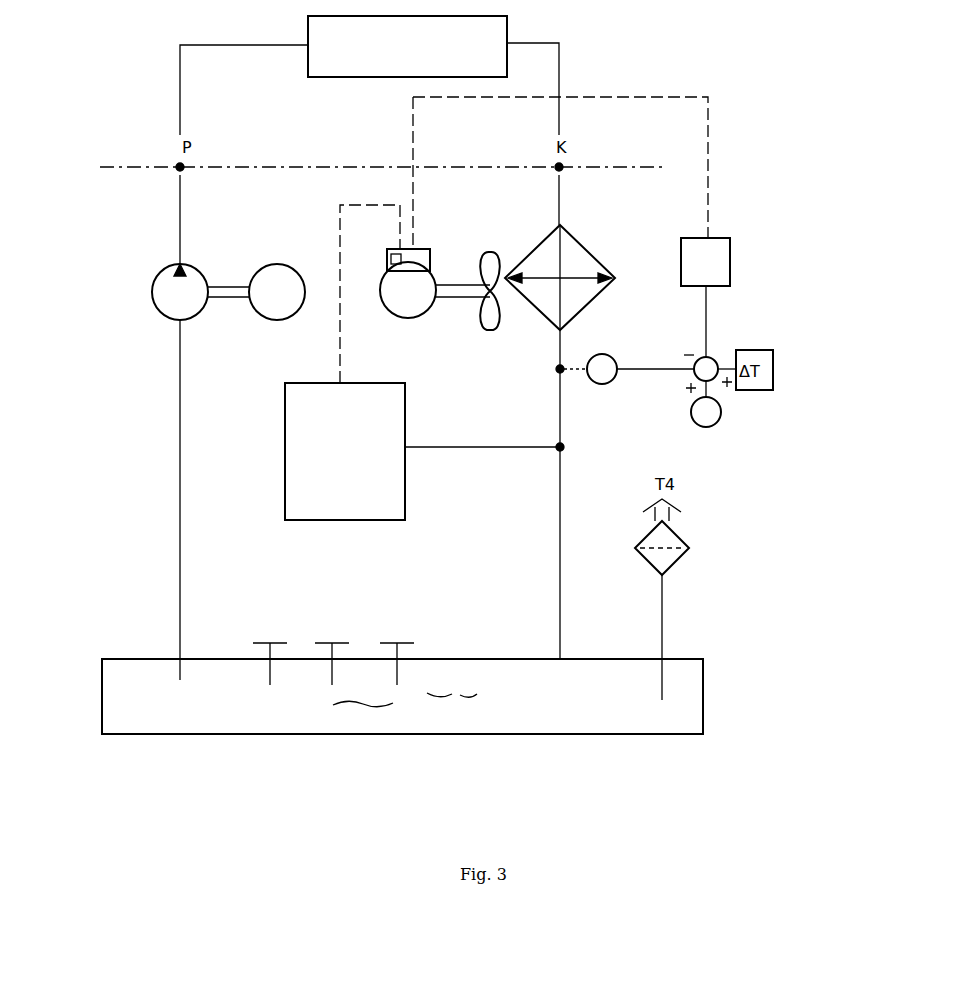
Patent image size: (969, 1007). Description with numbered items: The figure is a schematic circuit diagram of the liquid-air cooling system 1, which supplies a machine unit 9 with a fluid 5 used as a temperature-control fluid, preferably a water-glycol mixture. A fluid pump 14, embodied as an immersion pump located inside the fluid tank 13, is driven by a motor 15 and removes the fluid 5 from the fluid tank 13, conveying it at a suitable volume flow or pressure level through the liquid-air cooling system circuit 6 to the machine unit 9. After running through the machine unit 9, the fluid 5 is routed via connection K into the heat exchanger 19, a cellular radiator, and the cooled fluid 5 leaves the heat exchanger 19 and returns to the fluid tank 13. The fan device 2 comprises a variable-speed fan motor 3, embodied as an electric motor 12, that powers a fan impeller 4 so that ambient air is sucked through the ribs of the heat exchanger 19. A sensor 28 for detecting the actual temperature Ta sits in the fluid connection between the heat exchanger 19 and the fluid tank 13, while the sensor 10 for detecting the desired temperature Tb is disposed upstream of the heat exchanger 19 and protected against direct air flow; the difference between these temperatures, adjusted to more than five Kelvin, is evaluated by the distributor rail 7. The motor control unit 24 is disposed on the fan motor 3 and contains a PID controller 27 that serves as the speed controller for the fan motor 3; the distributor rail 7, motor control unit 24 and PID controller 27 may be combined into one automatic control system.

The liquid-air cooling system 1 is at (172, 812).
The fan device 2 is at (383, 249).
The fan motor 3 is at (404, 313).
The fan impeller 4 is at (490, 258).
The fluid 5 is at (375, 707).
The liquid-air cooling system circuit 6 is at (158, 407).
The distributor rail 7 is at (718, 248).
The machine unit 9 is at (369, 140).
The sensor for detecting the desired temperature 10 is at (720, 418).
The electric motor 12 is at (392, 320).
The fluid tank 13 is at (220, 736).
The fluid pump 14 is at (172, 282).
The motor 15 is at (272, 270).
The heat exchanger 19 is at (590, 248).
The motor control unit 24 is at (435, 250).
The PID controller 27 is at (424, 451).
The sensor for detecting the actual temperature 28 is at (610, 360).